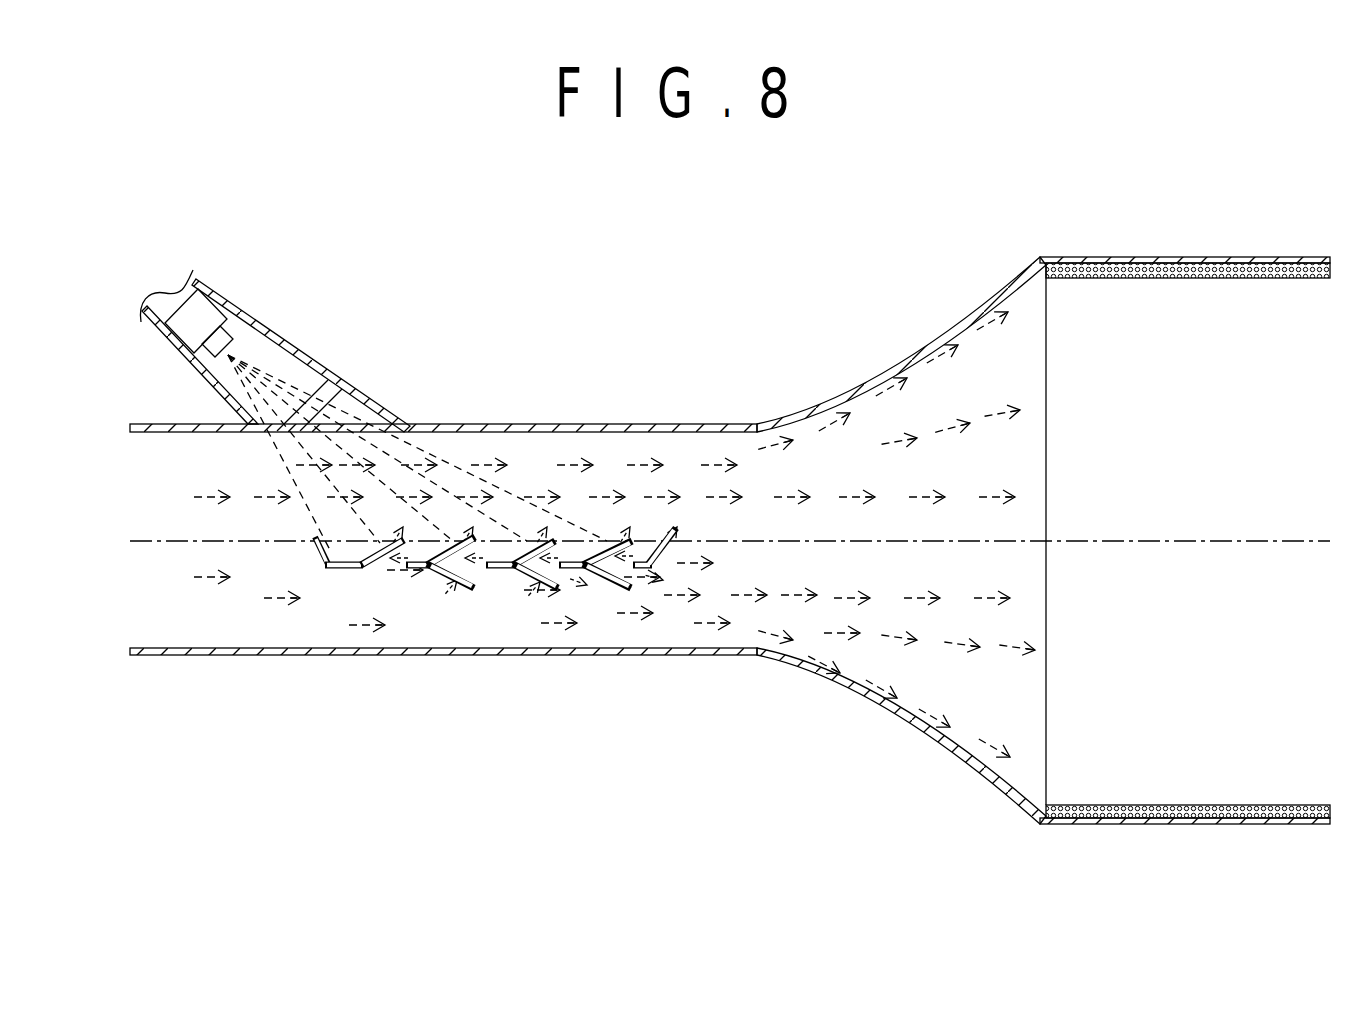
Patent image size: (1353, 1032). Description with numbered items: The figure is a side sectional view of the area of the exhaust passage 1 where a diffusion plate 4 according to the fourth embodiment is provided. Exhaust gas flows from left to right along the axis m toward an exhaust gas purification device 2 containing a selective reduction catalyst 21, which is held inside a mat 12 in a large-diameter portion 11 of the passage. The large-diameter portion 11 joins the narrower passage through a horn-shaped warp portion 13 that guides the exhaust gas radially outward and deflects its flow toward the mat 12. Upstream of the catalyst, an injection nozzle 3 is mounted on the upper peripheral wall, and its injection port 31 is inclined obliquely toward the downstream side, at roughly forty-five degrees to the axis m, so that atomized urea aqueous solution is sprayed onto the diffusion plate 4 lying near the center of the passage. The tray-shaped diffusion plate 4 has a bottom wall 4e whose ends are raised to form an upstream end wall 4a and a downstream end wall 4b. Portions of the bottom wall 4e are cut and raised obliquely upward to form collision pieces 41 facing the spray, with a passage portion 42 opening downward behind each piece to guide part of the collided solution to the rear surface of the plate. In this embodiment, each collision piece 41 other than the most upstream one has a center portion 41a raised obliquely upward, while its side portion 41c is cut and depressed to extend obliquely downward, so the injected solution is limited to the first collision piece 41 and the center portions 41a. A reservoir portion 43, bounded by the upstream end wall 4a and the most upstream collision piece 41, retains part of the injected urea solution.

The exhaust passage 1 is at (650, 425).
The exhaust gas purification device 2 is at (1140, 824).
The injection nozzle 3 is at (373, 385).
The injection port 31 is at (237, 345).
The diffusion plate 4 is at (532, 578).
The upstream end wall 4a is at (318, 567).
The downstream end wall 4b is at (662, 567).
The bottom wall 4e is at (343, 570).
The large-diameter portion 11 is at (1110, 258).
The mat 12 is at (1215, 272).
The warp portion 13 is at (970, 318).
The selective reduction catalyst 21 is at (1257, 790).
The collision piece 41 is at (382, 575).
The center portion 41a is at (470, 590).
The side portion 41c is at (482, 580).
The passage portion 42 is at (400, 572).
The reservoir portion 43 is at (365, 570).
The axis m is at (1155, 538).